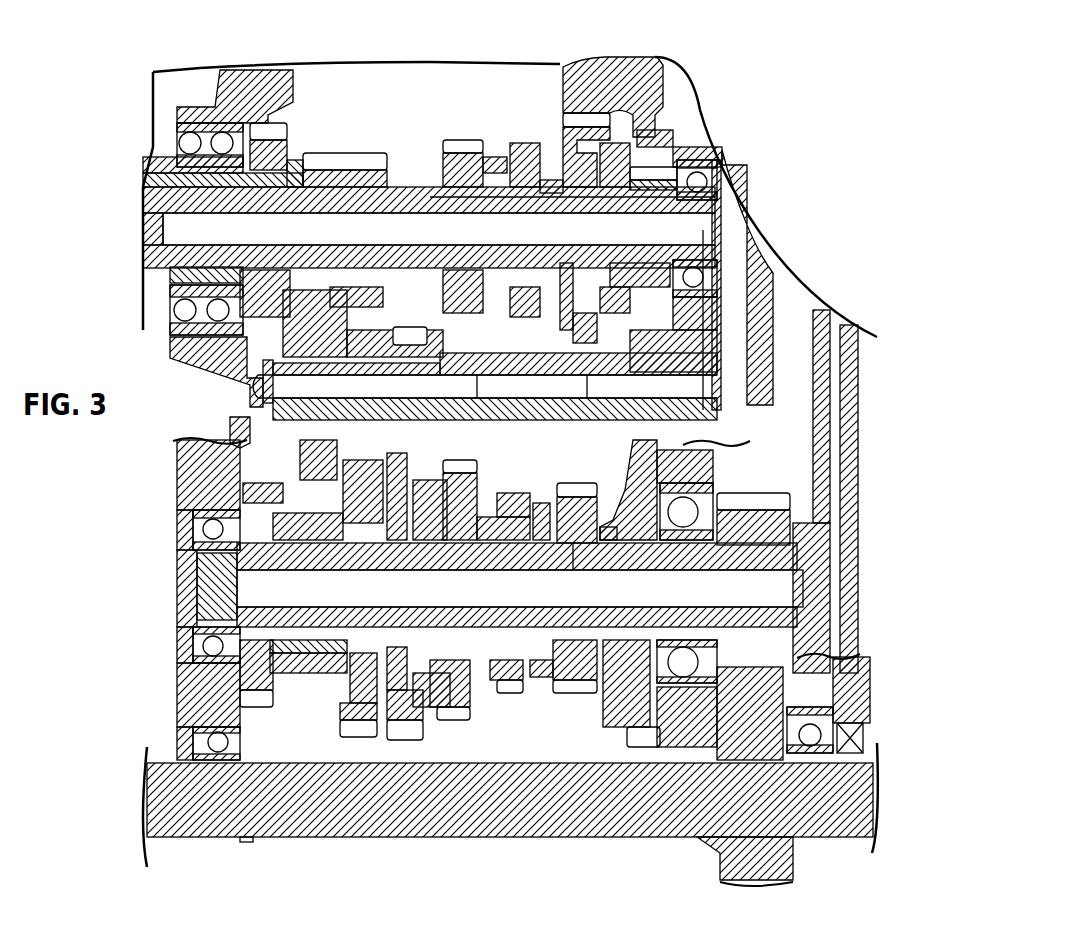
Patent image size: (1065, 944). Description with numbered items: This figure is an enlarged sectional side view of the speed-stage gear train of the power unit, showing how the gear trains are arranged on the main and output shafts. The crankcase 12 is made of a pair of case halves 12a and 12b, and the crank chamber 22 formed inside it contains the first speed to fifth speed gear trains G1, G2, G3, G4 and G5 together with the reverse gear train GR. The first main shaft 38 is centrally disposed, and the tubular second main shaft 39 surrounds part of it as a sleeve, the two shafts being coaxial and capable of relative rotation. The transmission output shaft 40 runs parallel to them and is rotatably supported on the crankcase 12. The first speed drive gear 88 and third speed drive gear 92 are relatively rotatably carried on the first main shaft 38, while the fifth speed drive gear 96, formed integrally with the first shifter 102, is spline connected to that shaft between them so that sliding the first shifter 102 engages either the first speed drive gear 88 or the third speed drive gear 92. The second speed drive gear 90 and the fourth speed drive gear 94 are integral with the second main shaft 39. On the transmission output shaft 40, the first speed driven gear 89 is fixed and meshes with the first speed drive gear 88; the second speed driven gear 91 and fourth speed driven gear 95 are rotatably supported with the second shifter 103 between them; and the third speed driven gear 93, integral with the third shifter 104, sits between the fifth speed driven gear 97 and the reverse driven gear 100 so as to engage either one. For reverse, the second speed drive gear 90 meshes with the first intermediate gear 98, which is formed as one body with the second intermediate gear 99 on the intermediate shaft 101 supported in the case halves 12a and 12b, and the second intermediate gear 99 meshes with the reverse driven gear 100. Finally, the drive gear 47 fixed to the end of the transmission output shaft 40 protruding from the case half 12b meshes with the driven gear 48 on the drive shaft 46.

The crankcase 12 is at (203, 90).
The case half 12a is at (247, 68).
The case half 12b is at (603, 60).
The fourth speed drive gear 94 is at (285, 127).
The second main shaft 39 is at (290, 168).
The second speed drive gear 90 is at (350, 163).
The first main shaft 38 is at (410, 187).
The third speed drive gear 92 is at (463, 143).
The first shifter 102 is at (553, 183).
The fifth speed drive gear 96 is at (572, 113).
The first speed drive gear 88 is at (660, 168).
The second intermediate gear 99 is at (407, 327).
The intermediate shaft 101 is at (462, 362).
The first intermediate gear 98 is at (247, 425).
The third speed driven gear 93 is at (463, 467).
The third shifter 104 is at (490, 500).
The fifth speed driven gear 97 is at (590, 483).
The first speed driven gear 89 is at (678, 440).
The drive gear 47 is at (763, 500).
The transmission output shaft 40 is at (197, 613).
The second shifter 103 is at (307, 653).
The fourth speed driven gear 95 is at (263, 700).
The second speed driven gear 91 is at (357, 730).
The fourth speed gear train G4 is at (273, 759).
The second speed gear train G2 is at (351, 764).
The reverse gear train GR is at (403, 745).
The drive shaft 46 is at (460, 822).
The reverse driven gear 100 is at (468, 723).
The crank chamber 22 is at (550, 753).
The third speed gear train G3 is at (463, 717).
The fifth speed gear train G5 is at (581, 698).
The first speed gear train G1 is at (643, 750).
The driven gear 48 is at (723, 850).